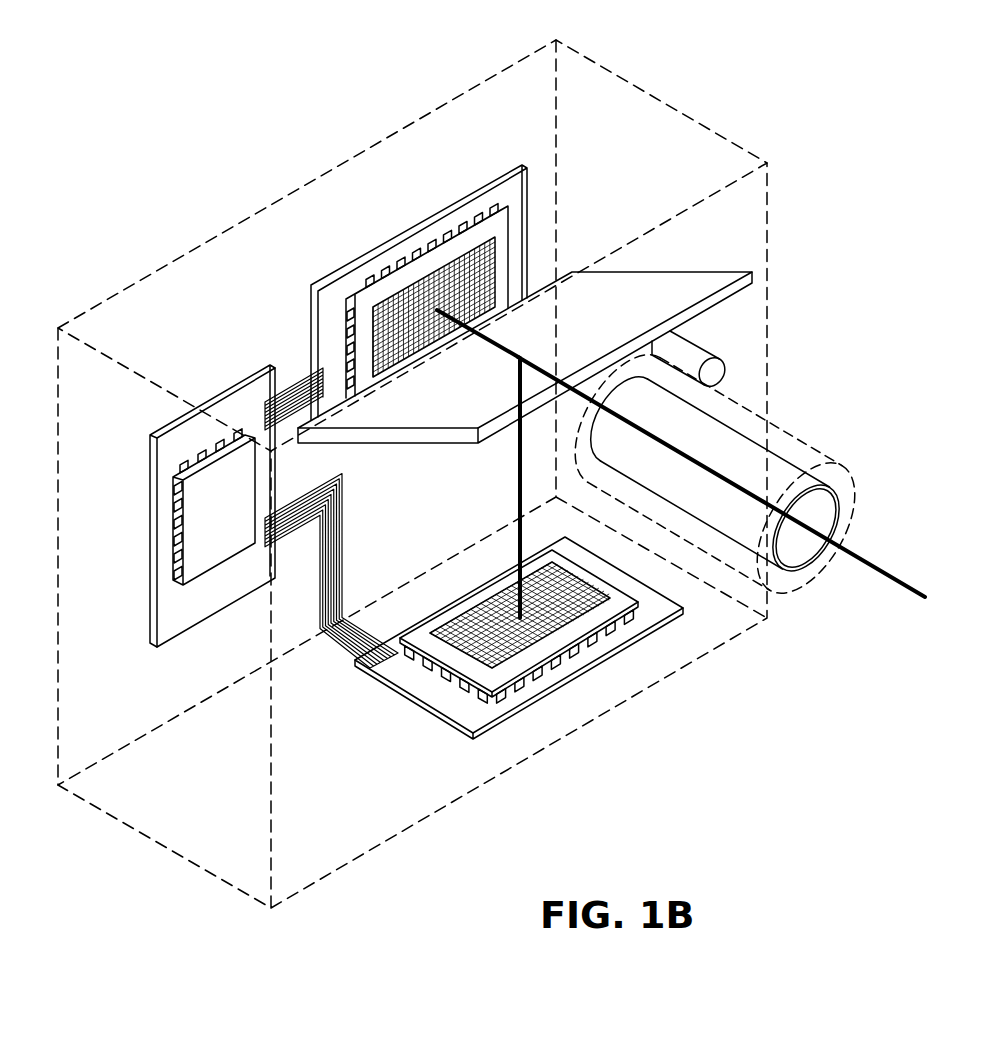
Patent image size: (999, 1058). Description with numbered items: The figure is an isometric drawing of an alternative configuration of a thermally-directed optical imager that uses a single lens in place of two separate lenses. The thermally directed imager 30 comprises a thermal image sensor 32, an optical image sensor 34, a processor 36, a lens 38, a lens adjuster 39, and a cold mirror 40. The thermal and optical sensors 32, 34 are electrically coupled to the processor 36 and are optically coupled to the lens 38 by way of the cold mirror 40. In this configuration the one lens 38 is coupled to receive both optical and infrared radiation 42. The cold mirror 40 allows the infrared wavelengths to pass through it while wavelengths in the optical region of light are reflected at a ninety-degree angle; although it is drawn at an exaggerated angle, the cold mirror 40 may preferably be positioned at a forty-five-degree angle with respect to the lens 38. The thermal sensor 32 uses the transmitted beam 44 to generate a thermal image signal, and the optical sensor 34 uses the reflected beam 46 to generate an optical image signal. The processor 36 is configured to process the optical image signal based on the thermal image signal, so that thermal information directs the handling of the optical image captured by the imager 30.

The thermally directed imager 30 is at (826, 147).
The thermal image sensor 32 is at (380, 307).
The optical image sensor 34 is at (500, 683).
The processor 36 is at (153, 632).
The lens 38 is at (840, 470).
The lens adjuster 39 is at (723, 375).
The cold mirror 40 is at (748, 272).
The optical and infrared radiation 42 is at (896, 578).
The beam 44 is at (500, 353).
The beam 46 is at (518, 524).